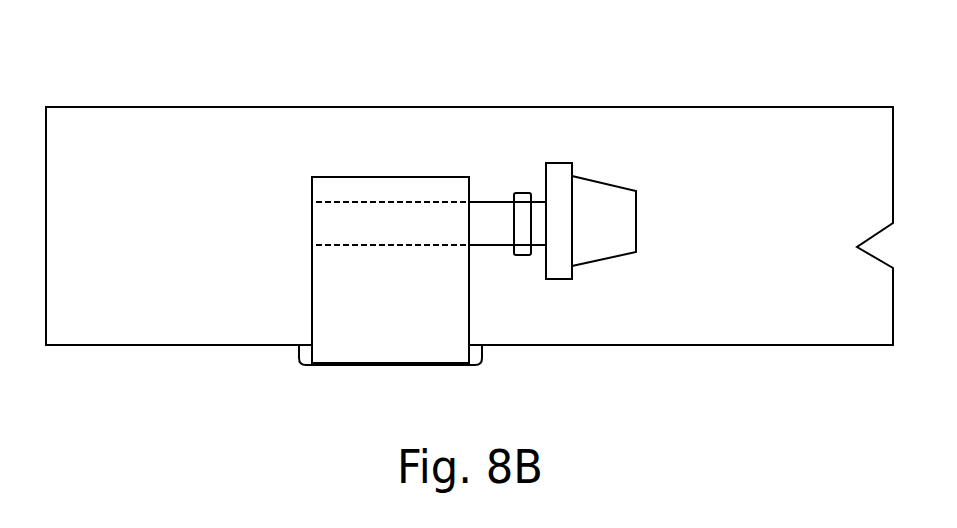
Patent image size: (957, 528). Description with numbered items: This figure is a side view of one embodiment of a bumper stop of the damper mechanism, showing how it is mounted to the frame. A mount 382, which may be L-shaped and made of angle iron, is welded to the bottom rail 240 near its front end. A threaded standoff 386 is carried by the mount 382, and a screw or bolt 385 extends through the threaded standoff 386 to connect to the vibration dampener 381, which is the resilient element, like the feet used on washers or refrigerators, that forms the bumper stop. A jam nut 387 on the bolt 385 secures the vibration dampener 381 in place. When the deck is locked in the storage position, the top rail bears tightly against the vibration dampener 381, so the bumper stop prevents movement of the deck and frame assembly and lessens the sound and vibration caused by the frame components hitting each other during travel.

The bottom rail 240 is at (710, 137).
The vibration dampener 381 is at (592, 193).
The mount 382 is at (367, 322).
The bolt 385 is at (499, 216).
The threaded standoff 386 is at (343, 188).
The jam nut 387 is at (522, 247).